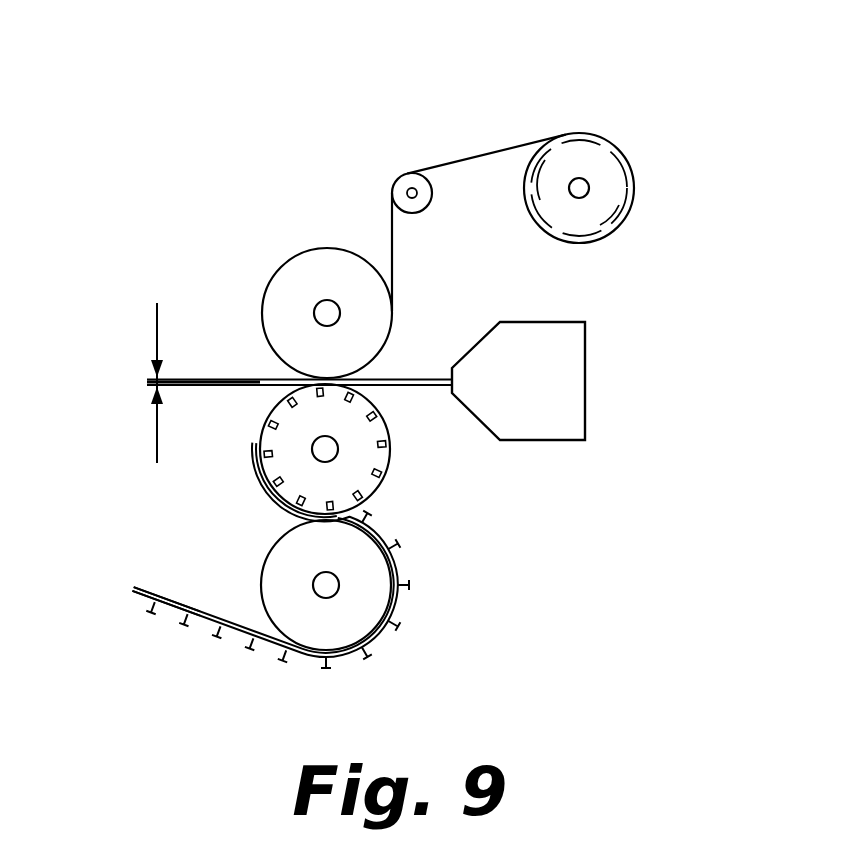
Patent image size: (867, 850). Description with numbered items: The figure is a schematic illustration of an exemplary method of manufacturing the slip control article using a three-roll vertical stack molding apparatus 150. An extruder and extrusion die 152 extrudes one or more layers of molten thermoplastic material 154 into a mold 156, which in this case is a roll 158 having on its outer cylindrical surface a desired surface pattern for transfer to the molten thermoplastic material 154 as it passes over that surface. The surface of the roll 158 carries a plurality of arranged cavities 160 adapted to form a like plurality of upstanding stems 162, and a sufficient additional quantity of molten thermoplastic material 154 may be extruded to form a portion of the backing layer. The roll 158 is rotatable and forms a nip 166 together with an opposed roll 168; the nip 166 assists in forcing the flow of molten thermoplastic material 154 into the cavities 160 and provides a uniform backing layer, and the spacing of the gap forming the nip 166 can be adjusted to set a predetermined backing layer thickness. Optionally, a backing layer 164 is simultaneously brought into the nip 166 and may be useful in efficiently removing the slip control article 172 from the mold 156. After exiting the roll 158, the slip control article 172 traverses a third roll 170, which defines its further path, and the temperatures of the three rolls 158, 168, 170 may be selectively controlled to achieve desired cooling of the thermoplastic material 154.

The three-roll vertical stack molding apparatus 150 is at (604, 90).
The extruder and extrusion die 152 is at (572, 370).
The molten thermoplastic material 154 is at (418, 377).
The mold 156 is at (375, 460).
The roll 158 is at (263, 594).
The cavities 160 is at (270, 497).
The upstanding stems 162 is at (292, 655).
The backing layer 164 is at (475, 158).
The nip 166 is at (107, 376).
The opposed roll 168 is at (293, 263).
The third roll 170 is at (378, 595).
The slip control article 172 is at (155, 587).